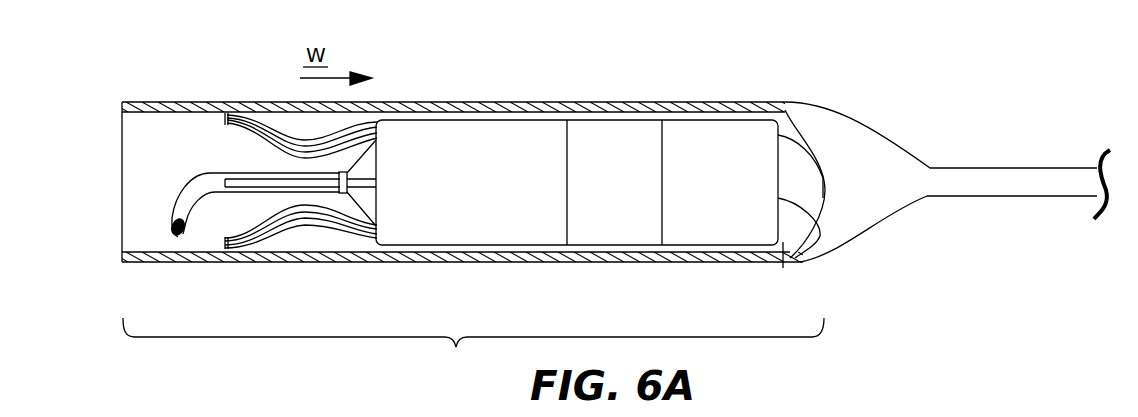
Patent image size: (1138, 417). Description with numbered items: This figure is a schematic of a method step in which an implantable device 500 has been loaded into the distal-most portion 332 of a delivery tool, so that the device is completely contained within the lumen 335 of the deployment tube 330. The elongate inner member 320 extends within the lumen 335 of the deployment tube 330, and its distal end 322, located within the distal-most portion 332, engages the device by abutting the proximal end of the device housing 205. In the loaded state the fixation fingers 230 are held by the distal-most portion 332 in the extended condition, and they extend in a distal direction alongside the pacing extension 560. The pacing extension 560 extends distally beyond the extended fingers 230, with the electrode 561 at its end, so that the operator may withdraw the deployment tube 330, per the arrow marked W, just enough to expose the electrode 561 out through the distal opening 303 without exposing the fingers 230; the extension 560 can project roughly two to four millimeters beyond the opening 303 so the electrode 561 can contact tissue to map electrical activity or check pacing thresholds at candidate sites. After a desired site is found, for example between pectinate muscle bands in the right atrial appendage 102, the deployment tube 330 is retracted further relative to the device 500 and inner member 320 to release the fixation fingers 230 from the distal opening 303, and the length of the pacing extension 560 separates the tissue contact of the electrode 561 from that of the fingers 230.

The right atrial appendage 102 is at (975, 416).
The device housing 205 is at (508, 197).
The fixation fingers 230 is at (252, 183).
The distal opening 303 is at (143, 223).
The elongate inner member 320 is at (810, 182).
The distal end 322 is at (787, 198).
The deployment tube 330 is at (1002, 180).
The distal-most portion 332 is at (473, 347).
The lumen 335 is at (783, 242).
The device 500 is at (486, 130).
The pacing extension 560 is at (207, 183).
The electrode 561 is at (182, 230).